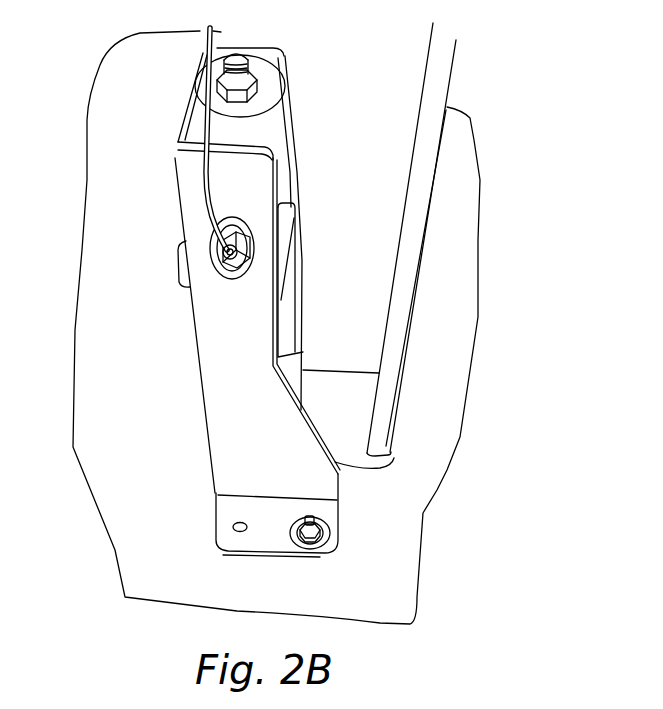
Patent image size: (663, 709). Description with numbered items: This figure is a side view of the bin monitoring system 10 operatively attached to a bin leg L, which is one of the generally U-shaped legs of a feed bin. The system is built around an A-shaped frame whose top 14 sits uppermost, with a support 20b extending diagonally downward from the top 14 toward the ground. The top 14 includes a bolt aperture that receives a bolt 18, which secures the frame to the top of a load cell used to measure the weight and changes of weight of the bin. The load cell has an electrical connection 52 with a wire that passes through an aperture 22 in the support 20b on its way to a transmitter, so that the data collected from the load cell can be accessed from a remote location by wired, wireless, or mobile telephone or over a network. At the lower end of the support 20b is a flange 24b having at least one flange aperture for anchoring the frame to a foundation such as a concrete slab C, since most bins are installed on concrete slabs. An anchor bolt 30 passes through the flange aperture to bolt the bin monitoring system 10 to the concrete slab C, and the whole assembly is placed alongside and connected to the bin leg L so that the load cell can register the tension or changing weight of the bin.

The bin monitoring system 10 is at (155, 117).
The top 14 is at (190, 127).
The bolt 18 is at (268, 82).
The support 20b is at (203, 367).
The aperture 22 is at (250, 258).
The flange 24b is at (227, 557).
The anchor bolt 30 is at (322, 548).
The electrical connection 52 is at (217, 40).
The leg L is at (402, 357).
The concrete slab C is at (147, 533).